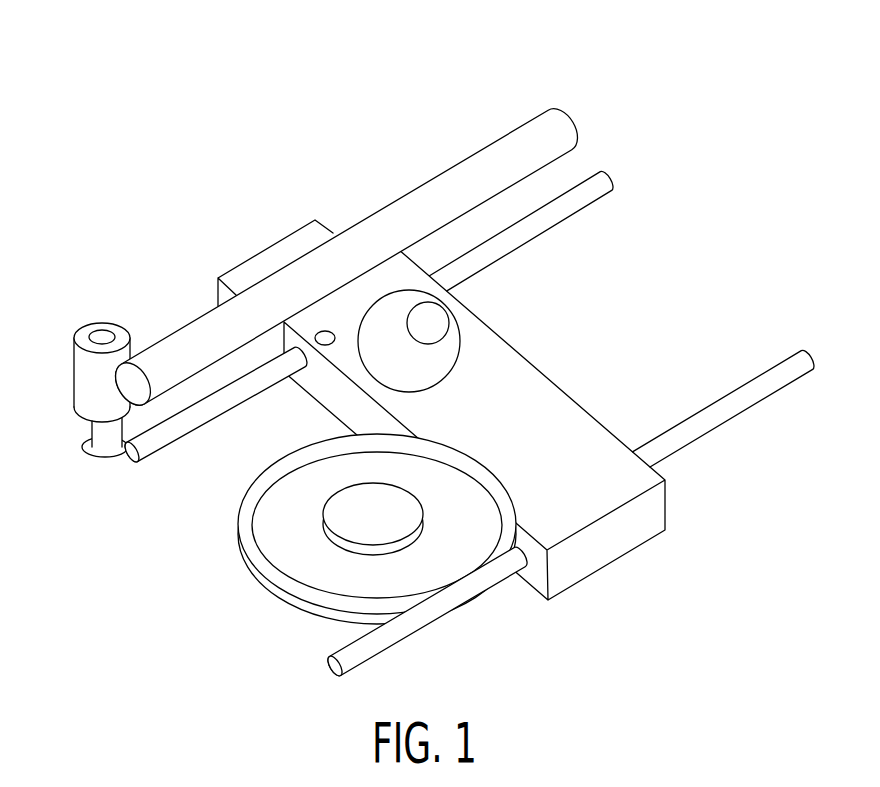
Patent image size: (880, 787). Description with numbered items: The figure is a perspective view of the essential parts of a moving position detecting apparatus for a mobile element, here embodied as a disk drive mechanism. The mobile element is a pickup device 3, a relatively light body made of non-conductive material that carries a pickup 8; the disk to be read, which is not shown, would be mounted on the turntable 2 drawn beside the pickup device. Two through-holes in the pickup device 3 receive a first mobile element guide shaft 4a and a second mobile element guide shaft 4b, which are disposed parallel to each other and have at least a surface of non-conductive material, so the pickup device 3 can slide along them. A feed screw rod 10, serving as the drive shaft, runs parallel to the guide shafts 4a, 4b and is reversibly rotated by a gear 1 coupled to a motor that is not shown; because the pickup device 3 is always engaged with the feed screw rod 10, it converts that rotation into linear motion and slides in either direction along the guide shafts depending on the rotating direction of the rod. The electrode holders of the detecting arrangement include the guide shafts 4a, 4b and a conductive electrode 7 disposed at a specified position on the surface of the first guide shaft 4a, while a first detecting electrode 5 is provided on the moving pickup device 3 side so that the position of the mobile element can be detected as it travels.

The gear 1 is at (80, 365).
The turntable 2 is at (273, 530).
The pickup device 3 is at (576, 437).
The first mobile element guide shaft 4a is at (600, 180).
The second mobile element guide shaft 4b is at (710, 427).
The first detecting electrode 5 is at (323, 330).
The conductive electrode 7 is at (185, 428).
The pickup 8 is at (433, 327).
The feed screw rod 10 is at (462, 174).